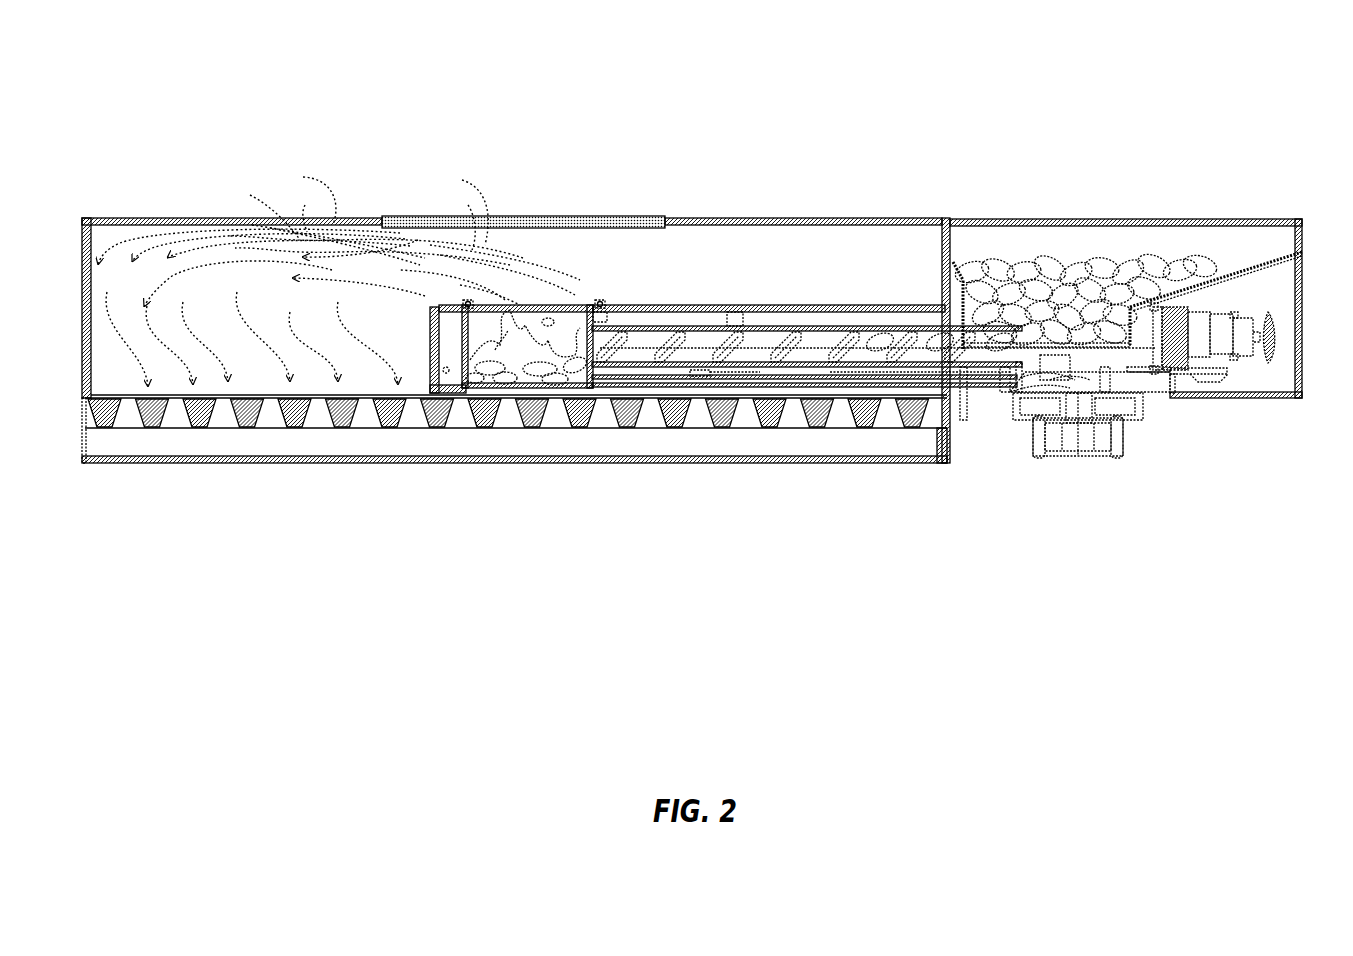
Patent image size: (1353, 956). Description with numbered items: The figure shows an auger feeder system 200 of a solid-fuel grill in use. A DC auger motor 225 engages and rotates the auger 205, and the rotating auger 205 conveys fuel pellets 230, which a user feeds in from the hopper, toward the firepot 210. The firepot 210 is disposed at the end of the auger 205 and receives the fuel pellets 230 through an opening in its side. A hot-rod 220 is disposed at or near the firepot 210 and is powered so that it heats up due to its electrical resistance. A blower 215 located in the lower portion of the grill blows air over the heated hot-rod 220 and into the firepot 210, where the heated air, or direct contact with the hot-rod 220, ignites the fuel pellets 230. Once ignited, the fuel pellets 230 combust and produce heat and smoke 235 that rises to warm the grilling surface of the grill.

The auger feeder system 200 is at (843, 162).
The auger 205 is at (775, 317).
The firepot 210 is at (545, 387).
The blower 215 is at (1095, 435).
The hot-rod 220 is at (625, 375).
The DC auger motor 225 is at (1210, 323).
The fuel pellets 230 is at (1068, 257).
The heat and smoke 235 is at (253, 243).